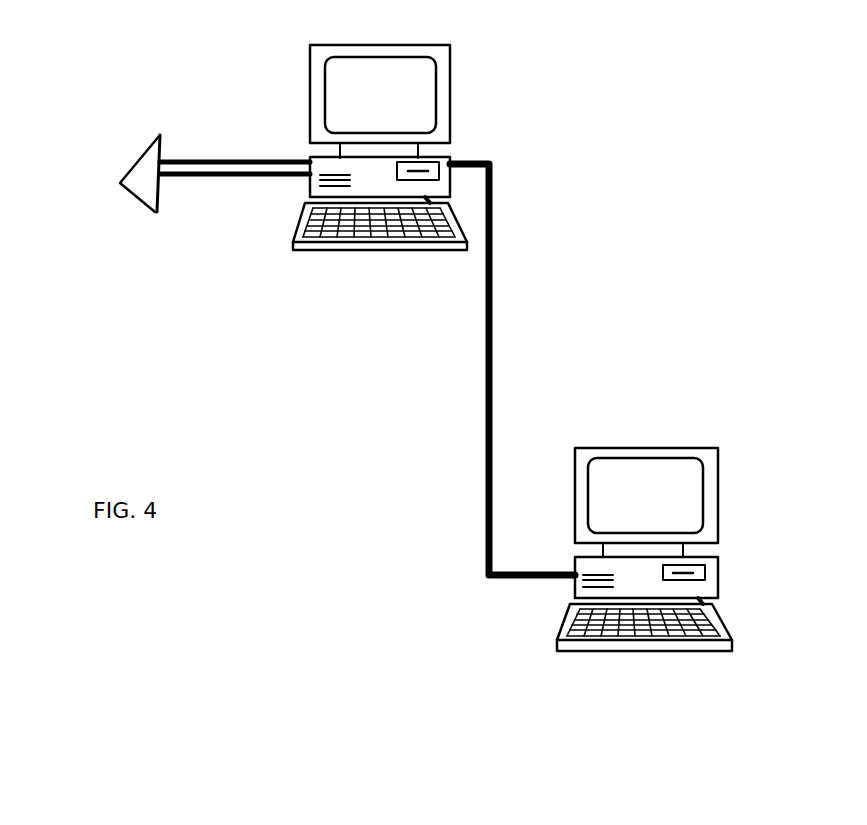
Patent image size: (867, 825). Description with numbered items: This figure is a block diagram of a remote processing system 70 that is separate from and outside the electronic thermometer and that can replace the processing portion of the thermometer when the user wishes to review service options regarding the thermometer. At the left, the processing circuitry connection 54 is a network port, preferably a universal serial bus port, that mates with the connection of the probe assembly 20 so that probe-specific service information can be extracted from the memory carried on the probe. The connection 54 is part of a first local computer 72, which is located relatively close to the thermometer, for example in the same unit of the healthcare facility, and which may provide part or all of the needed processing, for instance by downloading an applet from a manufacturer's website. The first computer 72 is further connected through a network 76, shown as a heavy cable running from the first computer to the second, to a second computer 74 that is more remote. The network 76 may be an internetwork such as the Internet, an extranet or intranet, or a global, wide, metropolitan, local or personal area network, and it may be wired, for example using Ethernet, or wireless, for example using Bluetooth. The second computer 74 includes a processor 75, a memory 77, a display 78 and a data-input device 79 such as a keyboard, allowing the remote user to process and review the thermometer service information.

The probe assembly 20 is at (31, 13).
The processing circuitry connection 54 is at (120, 183).
The remote processing system 70 is at (590, 61).
The first local computer 72 is at (310, 195).
The second computer 74 is at (575, 590).
The processor 75 is at (718, 566).
The network 76 is at (492, 343).
The memory 77 is at (718, 592).
The display 78 is at (575, 468).
The data-input device 79 is at (731, 634).